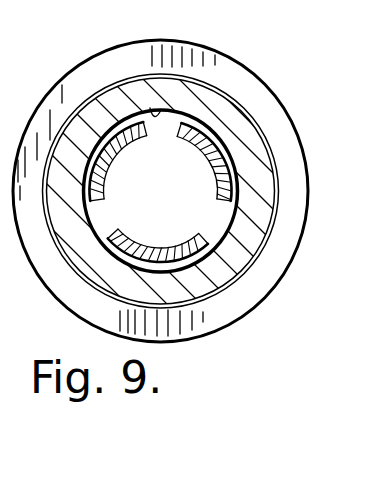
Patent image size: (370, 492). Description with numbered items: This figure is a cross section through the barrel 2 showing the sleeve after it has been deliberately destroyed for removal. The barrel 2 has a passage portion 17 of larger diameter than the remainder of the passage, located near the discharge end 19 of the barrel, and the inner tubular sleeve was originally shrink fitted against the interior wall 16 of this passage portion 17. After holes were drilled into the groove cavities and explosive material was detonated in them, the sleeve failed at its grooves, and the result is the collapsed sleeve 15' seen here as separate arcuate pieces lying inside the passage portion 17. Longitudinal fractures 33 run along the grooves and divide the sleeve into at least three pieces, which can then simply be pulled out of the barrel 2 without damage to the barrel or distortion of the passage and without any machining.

The barrel 2 is at (22, 120).
The collapsed sleeve 15' is at (161, 162).
The interior wall 16 is at (153, 112).
The passage portion 17 is at (222, 235).
The discharge end 19 is at (218, 100).
The longitudinal fractures 33 is at (170, 137).